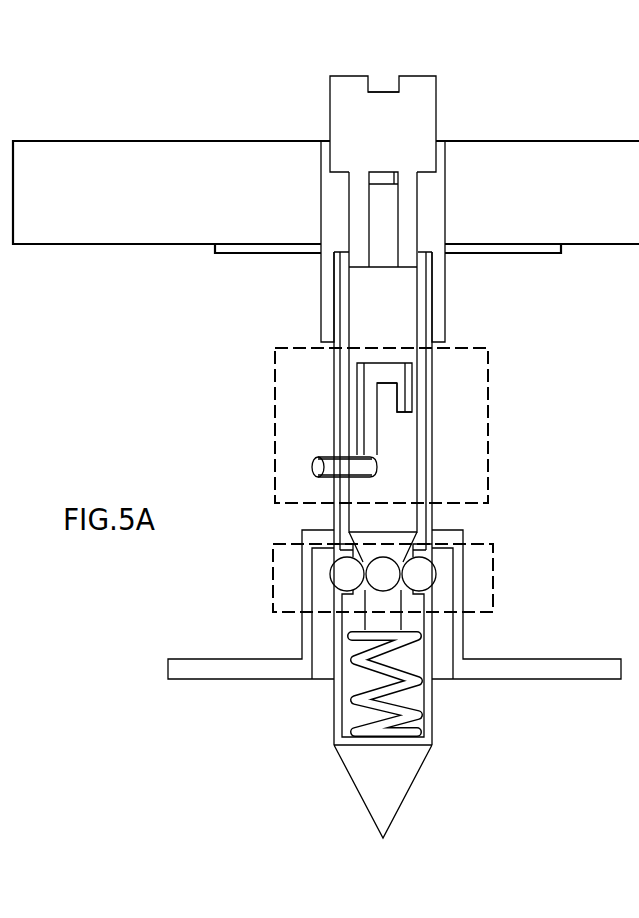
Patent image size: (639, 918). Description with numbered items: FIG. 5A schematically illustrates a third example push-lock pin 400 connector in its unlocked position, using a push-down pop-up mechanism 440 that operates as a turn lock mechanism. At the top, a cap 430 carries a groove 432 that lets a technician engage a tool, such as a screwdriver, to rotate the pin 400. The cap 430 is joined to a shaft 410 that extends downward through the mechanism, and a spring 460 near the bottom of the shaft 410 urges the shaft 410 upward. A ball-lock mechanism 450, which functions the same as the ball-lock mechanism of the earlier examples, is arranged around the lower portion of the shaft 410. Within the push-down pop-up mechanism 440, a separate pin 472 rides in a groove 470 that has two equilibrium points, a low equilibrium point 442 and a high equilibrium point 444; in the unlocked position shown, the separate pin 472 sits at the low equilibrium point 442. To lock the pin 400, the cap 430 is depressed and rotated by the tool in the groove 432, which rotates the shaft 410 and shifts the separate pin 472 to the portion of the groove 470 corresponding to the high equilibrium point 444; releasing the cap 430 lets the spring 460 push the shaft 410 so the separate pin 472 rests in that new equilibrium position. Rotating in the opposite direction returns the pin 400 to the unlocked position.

The push-lock pin 400 is at (481, 321).
The shaft 410 is at (403, 527).
The cap 430 is at (425, 108).
The groove 432 is at (382, 84).
The push-down pop-up mechanism 440 is at (488, 372).
The low equilibrium point 442 is at (377, 467).
The high equilibrium point 444 is at (405, 396).
The ball-lock mechanism 450 is at (493, 575).
The spring 460 is at (412, 682).
The groove 470 is at (398, 375).
The separate pin 472 is at (316, 461).